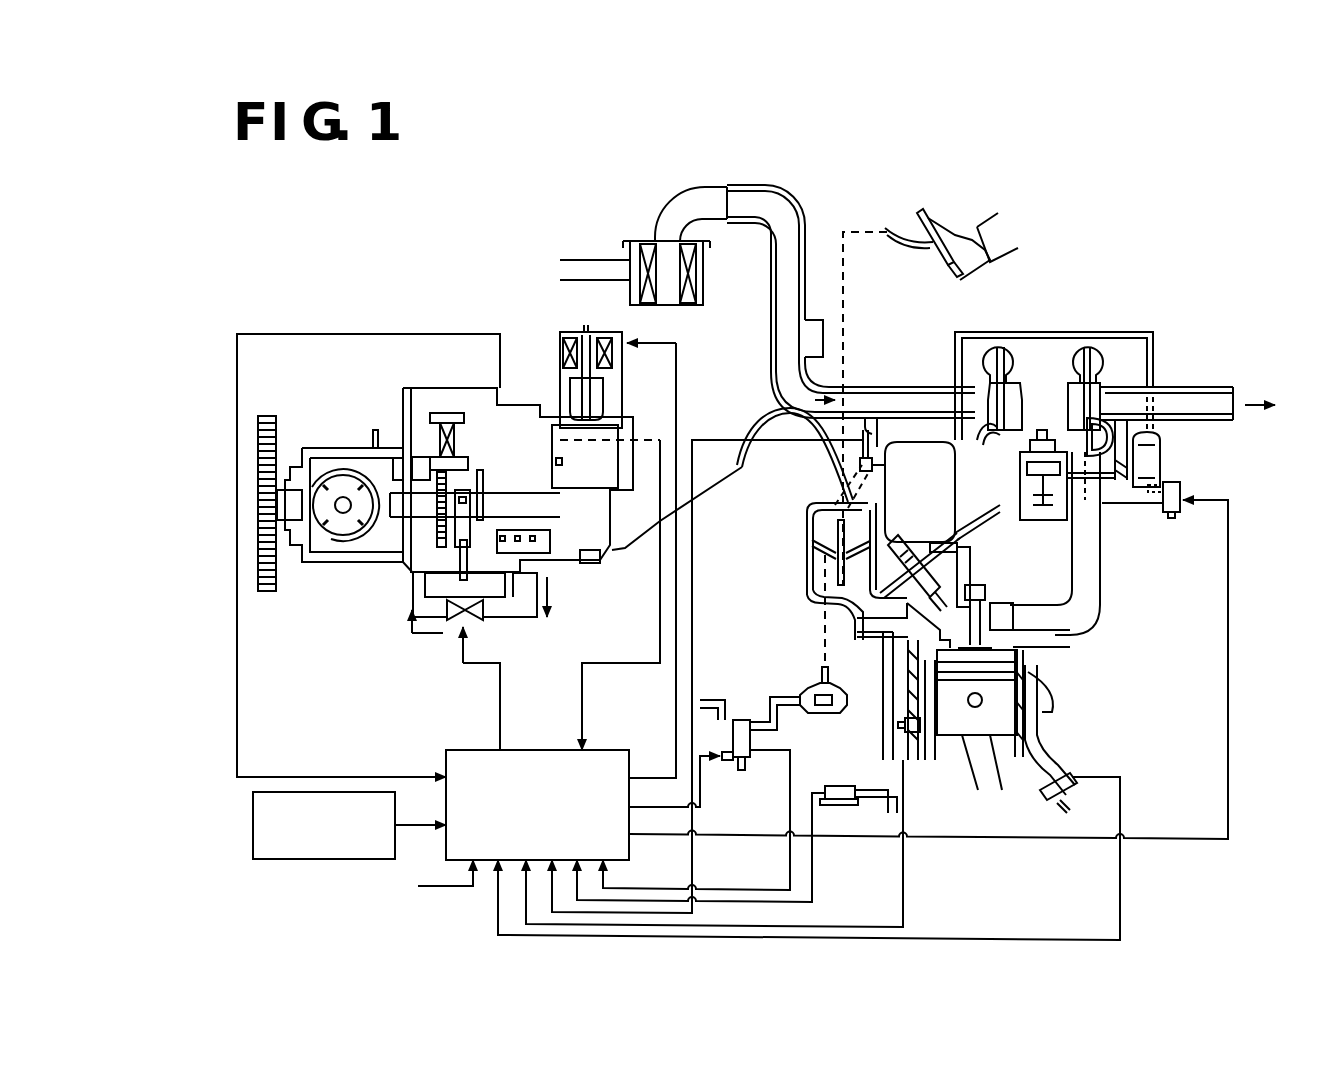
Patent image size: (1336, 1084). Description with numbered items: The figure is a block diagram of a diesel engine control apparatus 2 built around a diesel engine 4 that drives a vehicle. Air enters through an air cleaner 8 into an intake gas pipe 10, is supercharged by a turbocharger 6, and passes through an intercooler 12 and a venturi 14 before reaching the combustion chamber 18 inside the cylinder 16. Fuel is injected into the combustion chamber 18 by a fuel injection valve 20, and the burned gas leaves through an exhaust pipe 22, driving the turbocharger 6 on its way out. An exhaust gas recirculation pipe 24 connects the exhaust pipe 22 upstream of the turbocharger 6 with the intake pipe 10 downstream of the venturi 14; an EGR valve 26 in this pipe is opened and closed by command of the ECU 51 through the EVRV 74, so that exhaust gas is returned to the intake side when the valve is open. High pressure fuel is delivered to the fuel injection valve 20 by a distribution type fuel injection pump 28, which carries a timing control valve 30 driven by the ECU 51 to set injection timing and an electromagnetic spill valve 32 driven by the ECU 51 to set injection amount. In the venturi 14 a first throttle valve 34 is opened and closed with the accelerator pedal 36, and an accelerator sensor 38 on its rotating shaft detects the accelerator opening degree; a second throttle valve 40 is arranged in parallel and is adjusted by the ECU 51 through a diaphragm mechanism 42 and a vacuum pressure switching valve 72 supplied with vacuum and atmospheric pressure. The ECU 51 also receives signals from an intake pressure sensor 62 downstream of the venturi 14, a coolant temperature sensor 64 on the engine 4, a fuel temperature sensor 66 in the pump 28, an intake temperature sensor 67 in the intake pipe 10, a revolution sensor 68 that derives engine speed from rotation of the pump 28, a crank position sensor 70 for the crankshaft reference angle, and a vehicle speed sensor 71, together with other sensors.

The diesel engine control apparatus 2 is at (1152, 872).
The diesel engine 4 is at (1043, 667).
The turbocharger 6 is at (1073, 360).
The air cleaner 8 is at (640, 241).
The intake gas pipe 10 is at (792, 215).
The intercooler 12 is at (962, 375).
The venturi 14 is at (807, 590).
The cylinder 16 is at (1025, 738).
The combustion chamber 18 is at (965, 650).
The fuel injection valve 20 is at (845, 607).
The exhaust pipe 22 is at (1100, 598).
The exhaust gas recirculation pipe 24 is at (1103, 540).
The EGR valve 26 is at (1147, 432).
The distribution type fuel injection pump 28 is at (438, 388).
The timing control valve 30 is at (483, 612).
The electromagnetic spill valve 32 is at (584, 330).
The first throttle valve 34 is at (884, 545).
The accelerator pedal 36 is at (917, 213).
The accelerator sensor 38 is at (838, 522).
The second throttle valve 40 is at (810, 550).
The diaphragm mechanism 42 is at (800, 690).
The ECU 51 is at (545, 750).
The intake pressure sensor 62 is at (842, 805).
The coolant temperature sensor 64 is at (905, 725).
The fuel temperature sensor 66 is at (567, 456).
The intake temperature sensor 67 is at (812, 470).
The revolution sensor 68 is at (465, 413).
The crank position sensor 70 is at (1070, 785).
The vehicle speed sensor 71 is at (253, 820).
The vacuum pressure switching valve 72 is at (752, 770).
The EVRV 74 is at (1182, 480).